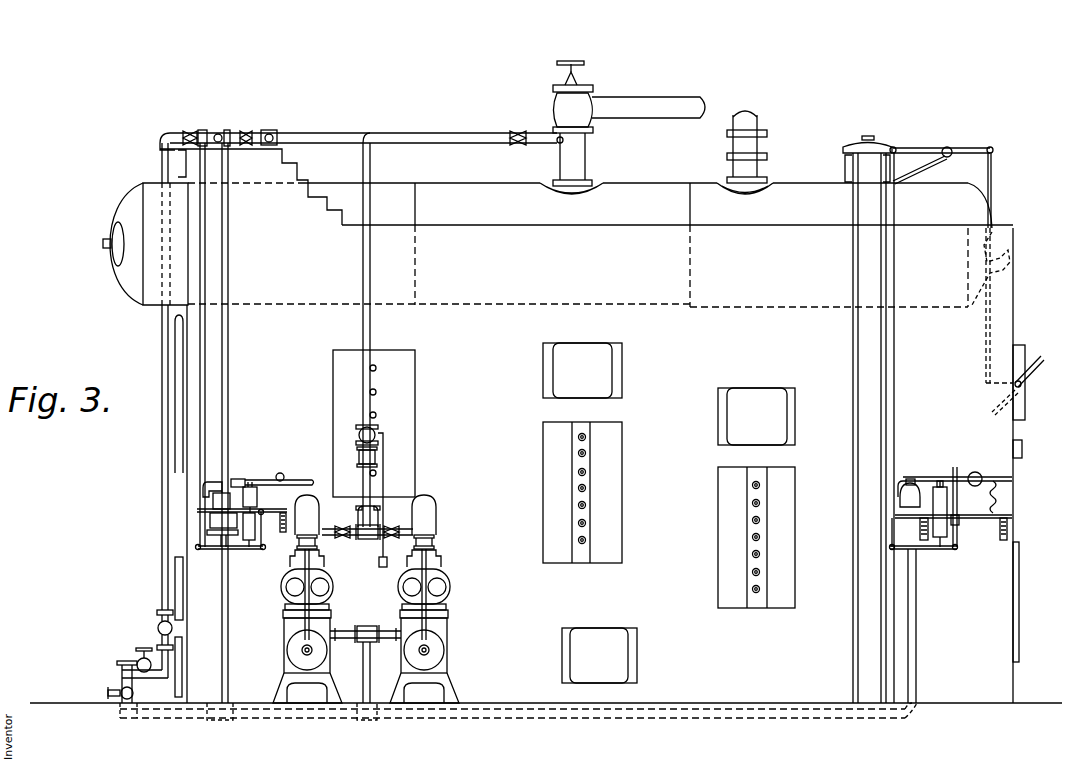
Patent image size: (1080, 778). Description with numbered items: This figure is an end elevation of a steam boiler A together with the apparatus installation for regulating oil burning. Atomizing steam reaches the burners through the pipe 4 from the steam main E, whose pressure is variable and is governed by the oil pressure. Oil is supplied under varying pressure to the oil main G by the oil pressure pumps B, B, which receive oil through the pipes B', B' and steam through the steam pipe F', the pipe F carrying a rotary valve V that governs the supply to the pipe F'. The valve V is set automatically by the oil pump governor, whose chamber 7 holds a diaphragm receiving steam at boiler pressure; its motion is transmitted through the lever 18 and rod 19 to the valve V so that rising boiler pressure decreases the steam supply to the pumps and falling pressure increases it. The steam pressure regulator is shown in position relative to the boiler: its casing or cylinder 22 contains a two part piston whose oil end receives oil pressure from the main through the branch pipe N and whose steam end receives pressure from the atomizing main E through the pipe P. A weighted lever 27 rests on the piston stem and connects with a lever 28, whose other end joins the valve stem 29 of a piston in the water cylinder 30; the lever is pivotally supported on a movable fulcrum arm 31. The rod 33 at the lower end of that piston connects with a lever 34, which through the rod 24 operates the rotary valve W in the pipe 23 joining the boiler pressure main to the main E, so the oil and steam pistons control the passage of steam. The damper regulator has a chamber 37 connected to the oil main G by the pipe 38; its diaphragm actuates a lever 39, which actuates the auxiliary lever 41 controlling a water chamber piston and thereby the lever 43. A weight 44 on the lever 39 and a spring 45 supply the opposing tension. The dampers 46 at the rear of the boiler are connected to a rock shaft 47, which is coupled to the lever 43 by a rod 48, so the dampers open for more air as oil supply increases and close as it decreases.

The steam boiler A is at (558, 184).
The steam main E is at (356, 132).
The rotary valve W is at (214, 131).
The pipe 23 is at (260, 134).
The pipe 4 is at (161, 330).
The oil main G is at (165, 716).
The rod 24 is at (201, 427).
The pipe P is at (231, 423).
The branch pipe N is at (223, 613).
The casing or cylinder 22 is at (210, 524).
The weighted lever 27 is at (232, 483).
The lever 28 is at (296, 480).
The valve stem 29 is at (262, 491).
The water cylinder 30 is at (257, 502).
The arm 31 is at (242, 491).
The rod 33 is at (258, 541).
The lever 34 is at (243, 547).
The pipe F is at (374, 330).
The rotary valve V is at (376, 437).
The steam pipe F' is at (356, 485).
The chamber 7 is at (360, 509).
The rod 19 is at (384, 512).
The lever 18 is at (384, 557).
The oil pressure pump B is at (371, 599).
The pipe B' is at (399, 658).
The rod 48 is at (897, 406).
The rock shaft 47 is at (952, 150).
The damper 46 is at (1038, 371).
The chamber 37 is at (907, 511).
The lever 39 is at (913, 477).
The auxiliary lever 41 is at (940, 477).
The lever 43 is at (937, 549).
The weight 44 is at (975, 473).
The spring 45 is at (983, 497).
The pipe 38 is at (917, 617).